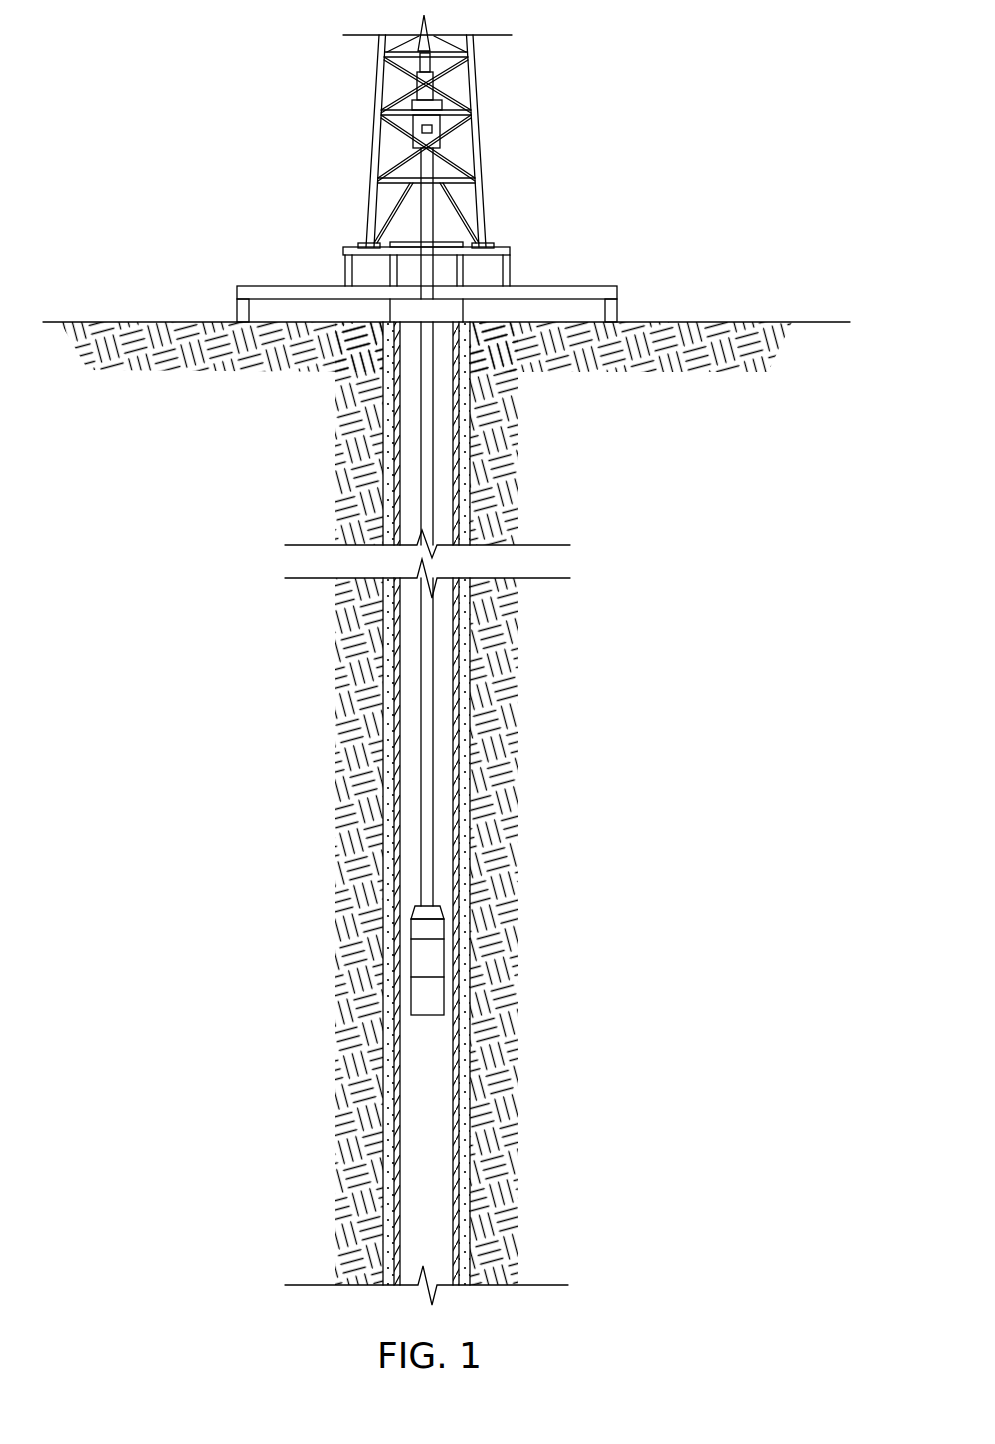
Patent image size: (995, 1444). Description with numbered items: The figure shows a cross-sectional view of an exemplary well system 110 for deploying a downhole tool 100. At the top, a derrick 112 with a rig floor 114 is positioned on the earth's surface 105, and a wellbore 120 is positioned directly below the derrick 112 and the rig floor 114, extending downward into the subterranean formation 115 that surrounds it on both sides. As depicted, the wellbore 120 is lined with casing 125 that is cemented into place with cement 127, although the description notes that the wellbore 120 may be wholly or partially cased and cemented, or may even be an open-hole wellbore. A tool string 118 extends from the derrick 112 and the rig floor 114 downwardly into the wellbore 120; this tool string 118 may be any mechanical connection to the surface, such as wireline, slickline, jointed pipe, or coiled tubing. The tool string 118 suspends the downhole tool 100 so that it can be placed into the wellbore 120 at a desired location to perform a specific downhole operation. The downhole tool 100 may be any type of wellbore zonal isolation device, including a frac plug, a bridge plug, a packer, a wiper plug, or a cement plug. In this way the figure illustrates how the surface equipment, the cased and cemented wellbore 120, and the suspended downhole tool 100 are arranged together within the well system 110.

The downhole tool 100 is at (454, 954).
The earth's surface 105 is at (112, 322).
The well system 110 is at (656, 122).
The derrick 112 is at (374, 140).
The rig floor 114 is at (265, 286).
The subterranean formation 115 is at (502, 1215).
The tool string 118 is at (433, 857).
The wellbore 120 is at (440, 743).
The casing 125 is at (448, 1132).
The cement 127 is at (470, 803).